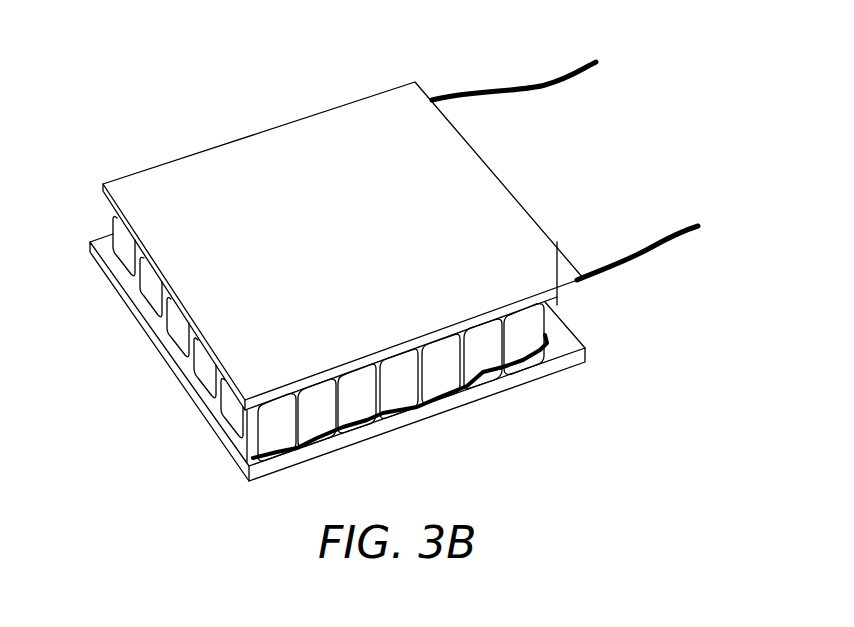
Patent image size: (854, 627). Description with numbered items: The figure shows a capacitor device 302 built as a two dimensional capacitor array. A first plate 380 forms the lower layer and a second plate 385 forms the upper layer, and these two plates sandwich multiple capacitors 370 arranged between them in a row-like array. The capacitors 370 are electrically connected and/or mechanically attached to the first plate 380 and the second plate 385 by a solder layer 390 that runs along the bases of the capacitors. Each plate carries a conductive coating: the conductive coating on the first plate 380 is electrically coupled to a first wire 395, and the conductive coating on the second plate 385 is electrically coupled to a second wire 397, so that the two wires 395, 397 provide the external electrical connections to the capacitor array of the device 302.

The capacitor device 302 is at (150, 126).
The second plate 385 is at (298, 135).
The first wire 395 is at (533, 82).
The second wire 397 is at (642, 252).
The capacitors 370 is at (153, 288).
The first plate 380 is at (213, 420).
The solder layer 390 is at (467, 390).